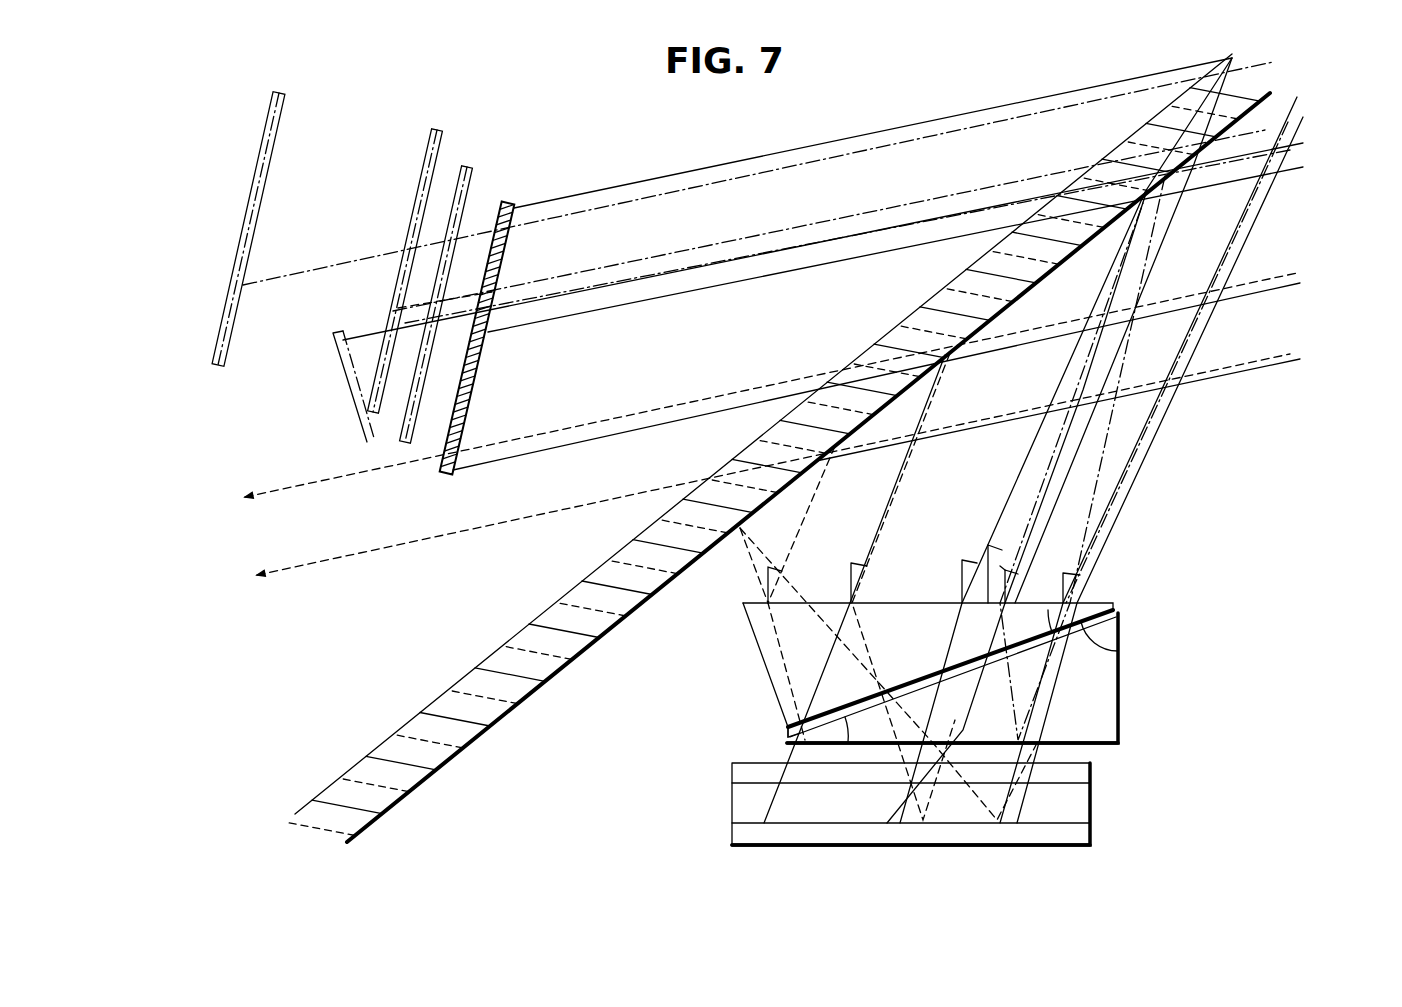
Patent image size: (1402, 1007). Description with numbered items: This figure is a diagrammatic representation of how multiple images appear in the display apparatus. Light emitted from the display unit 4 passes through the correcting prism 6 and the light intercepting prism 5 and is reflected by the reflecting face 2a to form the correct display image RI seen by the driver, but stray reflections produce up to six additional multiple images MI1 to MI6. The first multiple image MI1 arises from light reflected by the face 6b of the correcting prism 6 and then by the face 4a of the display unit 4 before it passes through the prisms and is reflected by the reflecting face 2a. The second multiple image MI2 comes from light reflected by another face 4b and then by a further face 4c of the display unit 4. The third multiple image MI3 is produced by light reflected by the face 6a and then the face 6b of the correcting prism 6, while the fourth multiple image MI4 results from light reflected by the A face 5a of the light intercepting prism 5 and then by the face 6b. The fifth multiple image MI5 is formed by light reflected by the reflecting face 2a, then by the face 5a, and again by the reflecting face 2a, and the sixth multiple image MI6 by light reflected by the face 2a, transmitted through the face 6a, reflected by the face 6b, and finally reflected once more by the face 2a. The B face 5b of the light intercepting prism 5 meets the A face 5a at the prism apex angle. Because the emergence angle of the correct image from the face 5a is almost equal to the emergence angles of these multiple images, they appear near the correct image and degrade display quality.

The first multiple image MI1 is at (477, 163).
The second multiple image MI2 is at (446, 124).
The third multiple image MI3 is at (340, 391).
The fourth multiple image MI4 is at (297, 82).
The fifth multiple image MI5 is at (773, 478).
The sixth multiple image MI6 is at (771, 400).
The correct display image RI is at (515, 204).
The reflecting face 2a is at (603, 634).
The display unit 4 is at (1083, 818).
The face of the display unit 4a is at (1091, 785).
The face of the display unit 4b is at (1092, 800).
The face of the display unit 4c is at (1093, 814).
The light intercepting prism 5 is at (1121, 606).
The A face of the light intercepting prism 5a is at (1100, 603).
The B face of the light intercepting prism 5b is at (787, 731).
The correcting prism 6 is at (1110, 690).
The face of the correcting prism 6a is at (1120, 643).
The face of the correcting prism 6b is at (1114, 746).